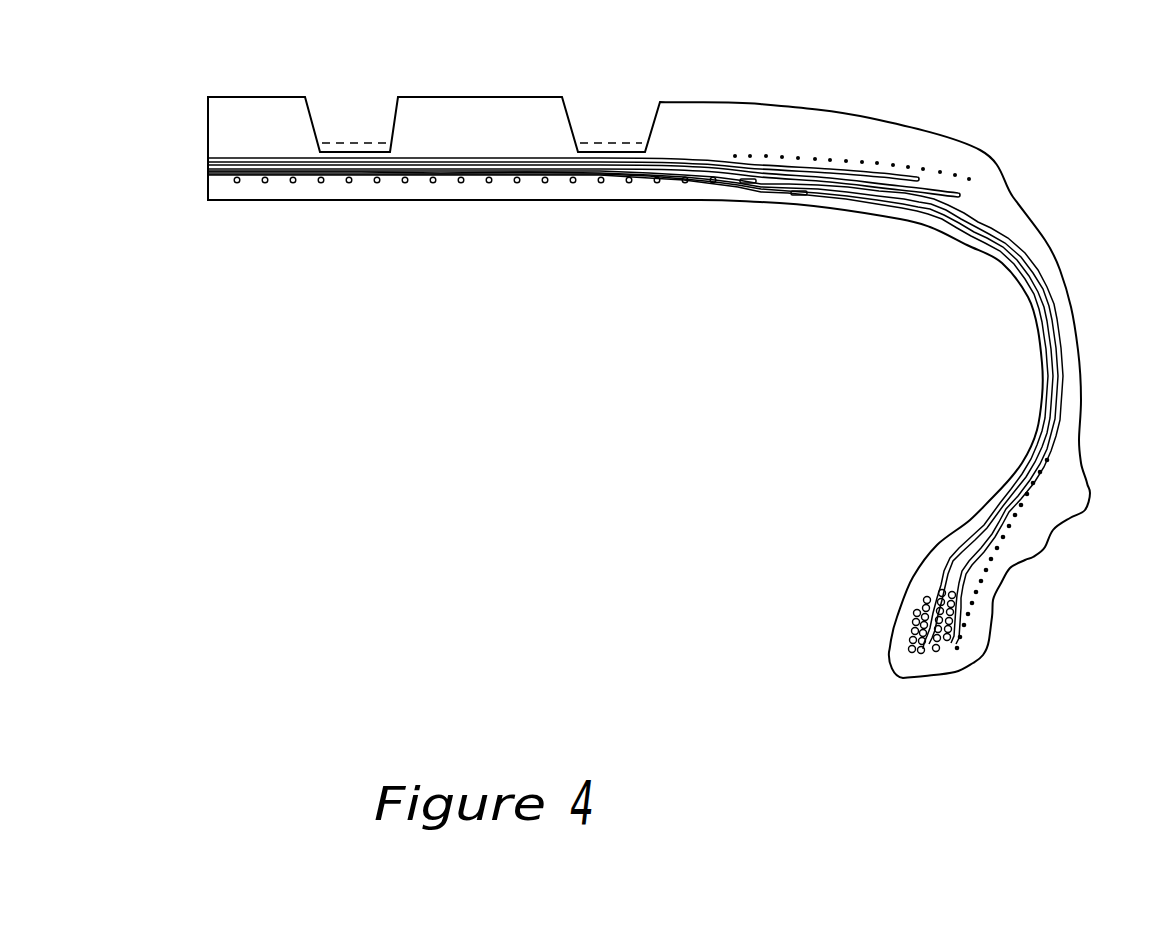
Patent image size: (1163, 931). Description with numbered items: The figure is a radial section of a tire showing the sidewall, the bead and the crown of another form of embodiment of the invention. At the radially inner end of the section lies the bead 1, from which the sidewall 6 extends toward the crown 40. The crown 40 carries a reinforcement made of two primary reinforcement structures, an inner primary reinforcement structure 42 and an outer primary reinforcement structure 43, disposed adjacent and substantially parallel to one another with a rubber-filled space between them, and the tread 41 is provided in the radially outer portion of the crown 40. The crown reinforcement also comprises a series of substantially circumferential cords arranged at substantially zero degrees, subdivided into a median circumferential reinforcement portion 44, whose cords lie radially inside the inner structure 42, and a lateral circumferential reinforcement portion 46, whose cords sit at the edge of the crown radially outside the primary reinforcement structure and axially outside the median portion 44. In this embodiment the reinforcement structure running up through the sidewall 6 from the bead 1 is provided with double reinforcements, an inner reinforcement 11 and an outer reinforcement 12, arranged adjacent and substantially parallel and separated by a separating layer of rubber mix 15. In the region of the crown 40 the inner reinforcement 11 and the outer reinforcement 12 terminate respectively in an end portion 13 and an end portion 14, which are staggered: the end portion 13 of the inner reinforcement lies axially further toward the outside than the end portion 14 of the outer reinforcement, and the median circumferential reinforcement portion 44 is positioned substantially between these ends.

The bead 1 is at (904, 618).
The sidewall 6 is at (1077, 412).
The inner reinforcement 11 is at (1008, 266).
The outer reinforcement 12 is at (1040, 282).
The end portion of the inner reinforcement 13 is at (800, 195).
The end portion of the outer reinforcement 14 is at (748, 182).
The separating layer of rubber mix 15 is at (978, 545).
The crown 40 is at (415, 190).
The tread 41 is at (432, 123).
The inner primary reinforcement structure 42 is at (562, 172).
The outer primary reinforcement structure 43 is at (510, 160).
The median circumferential reinforcement portion 44 is at (290, 190).
The lateral circumferential reinforcement portion 46 is at (877, 165).